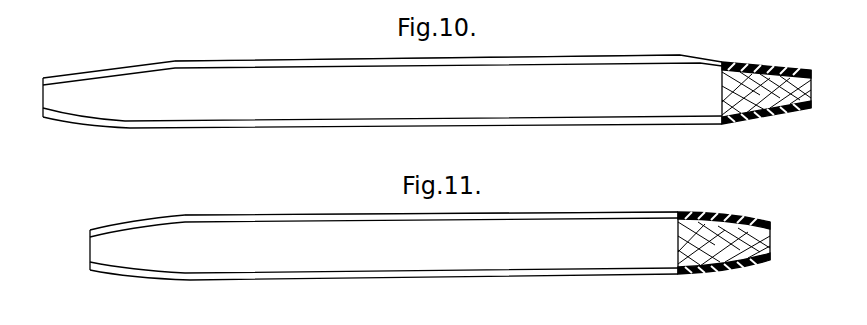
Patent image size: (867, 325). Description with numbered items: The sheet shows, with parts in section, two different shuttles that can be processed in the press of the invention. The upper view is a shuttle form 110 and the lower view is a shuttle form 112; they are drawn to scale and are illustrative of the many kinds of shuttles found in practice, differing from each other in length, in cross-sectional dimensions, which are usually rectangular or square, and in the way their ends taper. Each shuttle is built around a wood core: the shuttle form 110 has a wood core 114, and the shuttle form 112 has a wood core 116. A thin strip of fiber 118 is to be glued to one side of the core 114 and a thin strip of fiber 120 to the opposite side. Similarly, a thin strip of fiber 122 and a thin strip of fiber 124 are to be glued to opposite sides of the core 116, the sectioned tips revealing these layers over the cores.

In FIG. 10, the shuttle form 110 is at (448, 149).
In FIG. 10, the wood core 114 is at (482, 78).
In FIG. 10, the thin strip of fiber 118 is at (565, 57).
In FIG. 10, the thin strip of fiber 120 is at (563, 126).
In FIG. 11, the shuttle form 112 is at (451, 304).
In FIG. 11, the wood core 116 is at (480, 228).
In FIG. 11, the thin strip of fiber 122 is at (562, 213).
In FIG. 11, the thin strip of fiber 124 is at (555, 275).